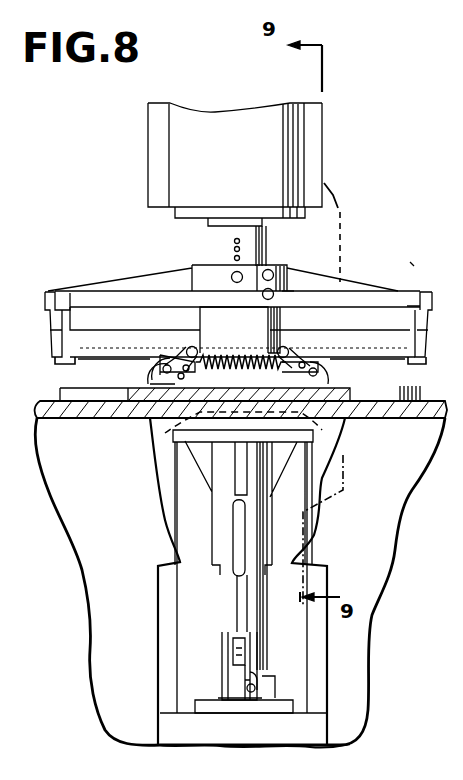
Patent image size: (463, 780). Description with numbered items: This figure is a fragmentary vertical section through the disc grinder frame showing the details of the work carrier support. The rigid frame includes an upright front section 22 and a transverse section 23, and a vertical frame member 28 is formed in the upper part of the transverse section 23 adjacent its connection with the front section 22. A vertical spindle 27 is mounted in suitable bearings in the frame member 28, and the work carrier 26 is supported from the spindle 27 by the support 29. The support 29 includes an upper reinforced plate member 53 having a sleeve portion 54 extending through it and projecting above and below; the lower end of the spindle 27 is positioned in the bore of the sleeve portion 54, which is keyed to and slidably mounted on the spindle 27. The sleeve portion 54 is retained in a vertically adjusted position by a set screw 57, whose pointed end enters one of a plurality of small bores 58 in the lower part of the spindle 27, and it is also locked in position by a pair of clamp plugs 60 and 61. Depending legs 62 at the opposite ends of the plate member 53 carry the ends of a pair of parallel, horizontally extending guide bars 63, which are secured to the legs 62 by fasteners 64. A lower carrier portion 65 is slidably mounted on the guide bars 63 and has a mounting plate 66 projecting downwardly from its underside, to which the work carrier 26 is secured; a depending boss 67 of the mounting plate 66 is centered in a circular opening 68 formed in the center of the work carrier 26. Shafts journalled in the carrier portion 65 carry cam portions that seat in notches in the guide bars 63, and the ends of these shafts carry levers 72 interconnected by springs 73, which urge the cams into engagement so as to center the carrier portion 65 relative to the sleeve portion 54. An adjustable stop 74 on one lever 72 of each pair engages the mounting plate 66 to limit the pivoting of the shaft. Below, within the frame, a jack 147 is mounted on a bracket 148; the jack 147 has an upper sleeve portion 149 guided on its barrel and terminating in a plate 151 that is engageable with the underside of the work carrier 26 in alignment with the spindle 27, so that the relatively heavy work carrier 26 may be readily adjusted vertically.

The front section 22 is at (386, 565).
The transverse section 23 is at (322, 100).
The work carrier 26 is at (402, 404).
The vertical spindle 27 is at (268, 246).
The vertical frame member 28 is at (314, 127).
The support 29 is at (399, 253).
The upper reinforced plate member 53 is at (75, 296).
The sleeve portion 54 is at (195, 275).
The set screw 57 is at (233, 274).
The small bores 58 is at (234, 250).
The clamp plug 60 is at (275, 281).
The clamp plug 61 is at (288, 293).
The depending legs 62 is at (62, 320).
The guide bars 63 is at (75, 365).
The fasteners 64 is at (425, 362).
The lower carrier portion 65 is at (280, 320).
The mounting plate 66 is at (400, 394).
The depending boss 67 is at (165, 434).
The circular opening 68 is at (306, 434).
The lever 72 is at (186, 352).
The springs 73 is at (232, 360).
The adjustable stop 74 is at (158, 372).
The jack 147 is at (212, 645).
The bracket 148 is at (312, 735).
The upper sleeve portion 149 is at (223, 535).
The plate 151 is at (193, 443).